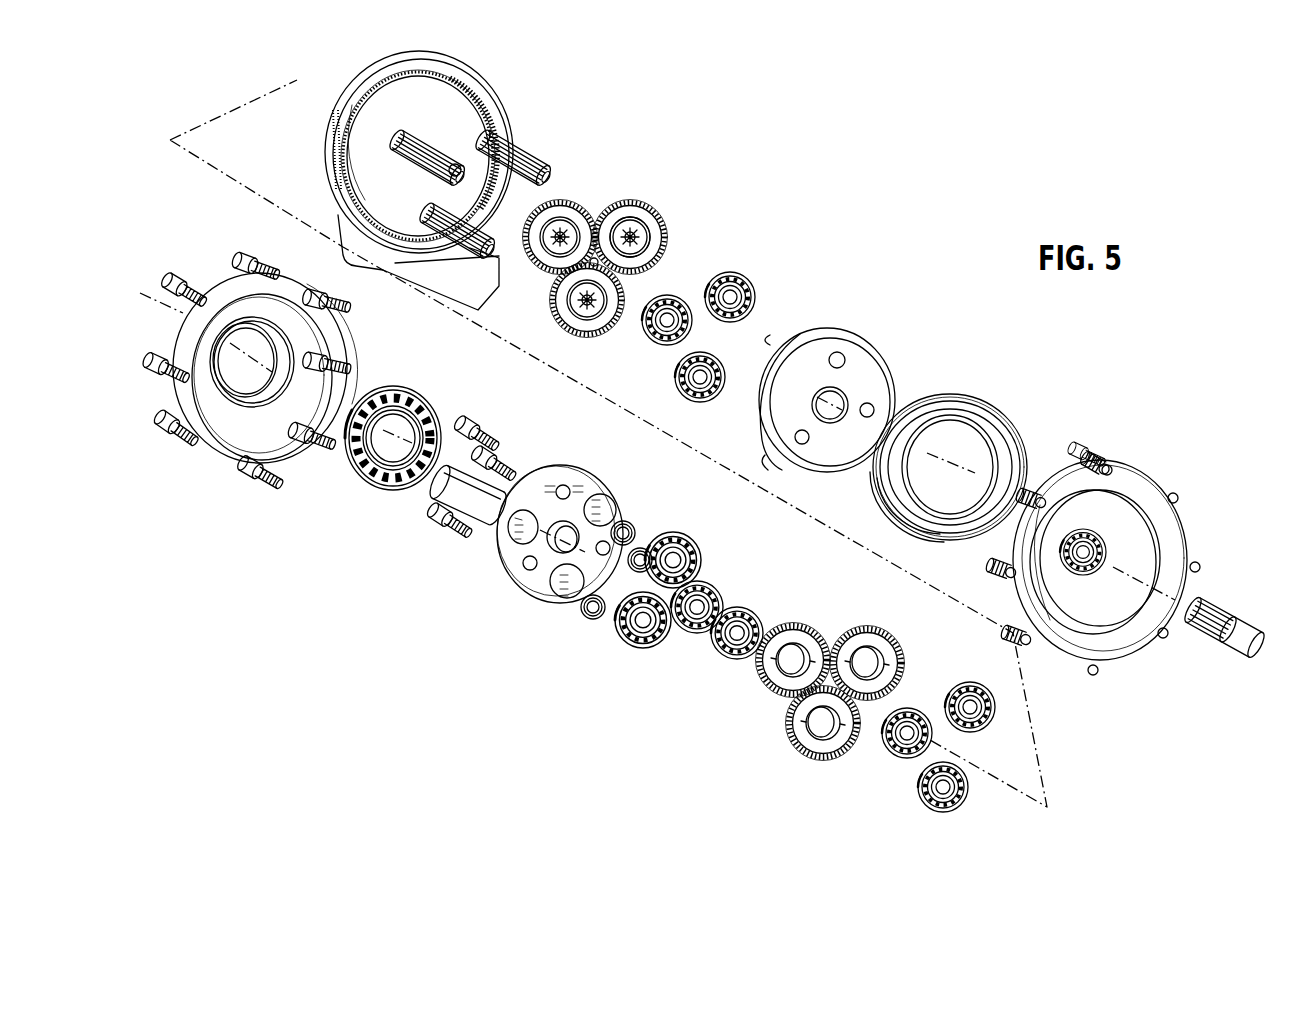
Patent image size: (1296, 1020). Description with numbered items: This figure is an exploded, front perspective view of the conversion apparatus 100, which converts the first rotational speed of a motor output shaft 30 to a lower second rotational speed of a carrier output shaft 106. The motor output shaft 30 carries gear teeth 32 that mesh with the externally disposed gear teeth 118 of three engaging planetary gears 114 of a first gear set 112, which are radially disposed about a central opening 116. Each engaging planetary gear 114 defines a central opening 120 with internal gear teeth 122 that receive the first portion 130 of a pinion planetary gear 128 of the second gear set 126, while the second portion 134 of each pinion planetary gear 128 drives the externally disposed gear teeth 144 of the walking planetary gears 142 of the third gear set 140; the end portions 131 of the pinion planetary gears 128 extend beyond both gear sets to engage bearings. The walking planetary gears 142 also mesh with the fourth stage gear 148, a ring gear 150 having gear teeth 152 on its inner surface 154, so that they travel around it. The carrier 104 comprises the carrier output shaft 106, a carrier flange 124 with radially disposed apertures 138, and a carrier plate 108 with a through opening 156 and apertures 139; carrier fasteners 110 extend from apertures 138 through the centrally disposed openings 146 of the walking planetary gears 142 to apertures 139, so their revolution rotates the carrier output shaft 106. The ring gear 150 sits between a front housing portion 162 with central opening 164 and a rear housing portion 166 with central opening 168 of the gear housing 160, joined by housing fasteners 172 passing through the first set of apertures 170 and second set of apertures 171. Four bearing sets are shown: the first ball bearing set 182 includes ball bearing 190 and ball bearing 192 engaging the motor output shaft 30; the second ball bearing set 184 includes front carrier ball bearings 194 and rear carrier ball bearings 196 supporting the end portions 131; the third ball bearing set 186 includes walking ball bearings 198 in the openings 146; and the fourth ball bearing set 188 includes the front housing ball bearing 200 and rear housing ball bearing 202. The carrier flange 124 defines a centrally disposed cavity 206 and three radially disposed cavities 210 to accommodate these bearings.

The motor output shaft 30 is at (1230, 630).
The gear teeth 32 is at (1207, 664).
The conversion apparatus 100 is at (931, 144).
The carrier 104 is at (686, 448).
The carrier output shaft 106 is at (471, 492).
The carrier plate 108 is at (837, 360).
The carrier fasteners 110 is at (437, 500).
The first gear set 112 is at (609, 250).
The engaging planetary gears 114 is at (604, 250).
The central opening 116 is at (633, 268).
The gear teeth 118 is at (684, 214).
The central opening 120 is at (629, 200).
The internal gear teeth 122 is at (527, 271).
The carrier flange 124 is at (540, 523).
The second gear set 126 is at (371, 284).
The pinion planetary gears 128 is at (524, 145).
The first portion 130 is at (455, 142).
The end portions 131 is at (440, 234).
The second portion 134 is at (427, 135).
The apertures 138 is at (497, 591).
The apertures 139 is at (841, 356).
The third gear set 140 is at (830, 690).
The walking planetary gears 142 is at (879, 663).
The gear teeth 144 is at (836, 733).
The centrally disposed openings 146 is at (793, 643).
The fourth stage gear 148 is at (405, 180).
The ring gear 150 is at (390, 180).
The gear teeth 152 is at (442, 152).
The inner surface 154 is at (383, 156).
The through opening 156 is at (864, 371).
The gear housing 160 is at (985, 536).
The front housing portion 162 is at (273, 365).
The central opening 164 is at (260, 413).
The rear housing portion 166 is at (1092, 553).
The central opening 168 is at (1125, 556).
The first set of apertures 170 is at (160, 426).
The second set of apertures 171 is at (1089, 444).
The housing fasteners 172 is at (244, 356).
The first ball bearing set 182 is at (928, 483).
The second ball bearing set 184 is at (698, 460).
The third ball bearing set 186 is at (977, 694).
The fourth ball bearing set 188 is at (948, 416).
The ball bearing 190 is at (1094, 602).
The ball bearing 192 is at (704, 697).
The front carrier ball bearings 194 is at (689, 584).
The rear carrier ball bearings 196 is at (709, 330).
The walking ball bearings 198 is at (964, 747).
The front housing ball bearing 200 is at (391, 435).
The rear housing ball bearing 202 is at (950, 436).
The centrally disposed cavity 206 is at (561, 476).
The radially disposed cavities 210 is at (608, 584).